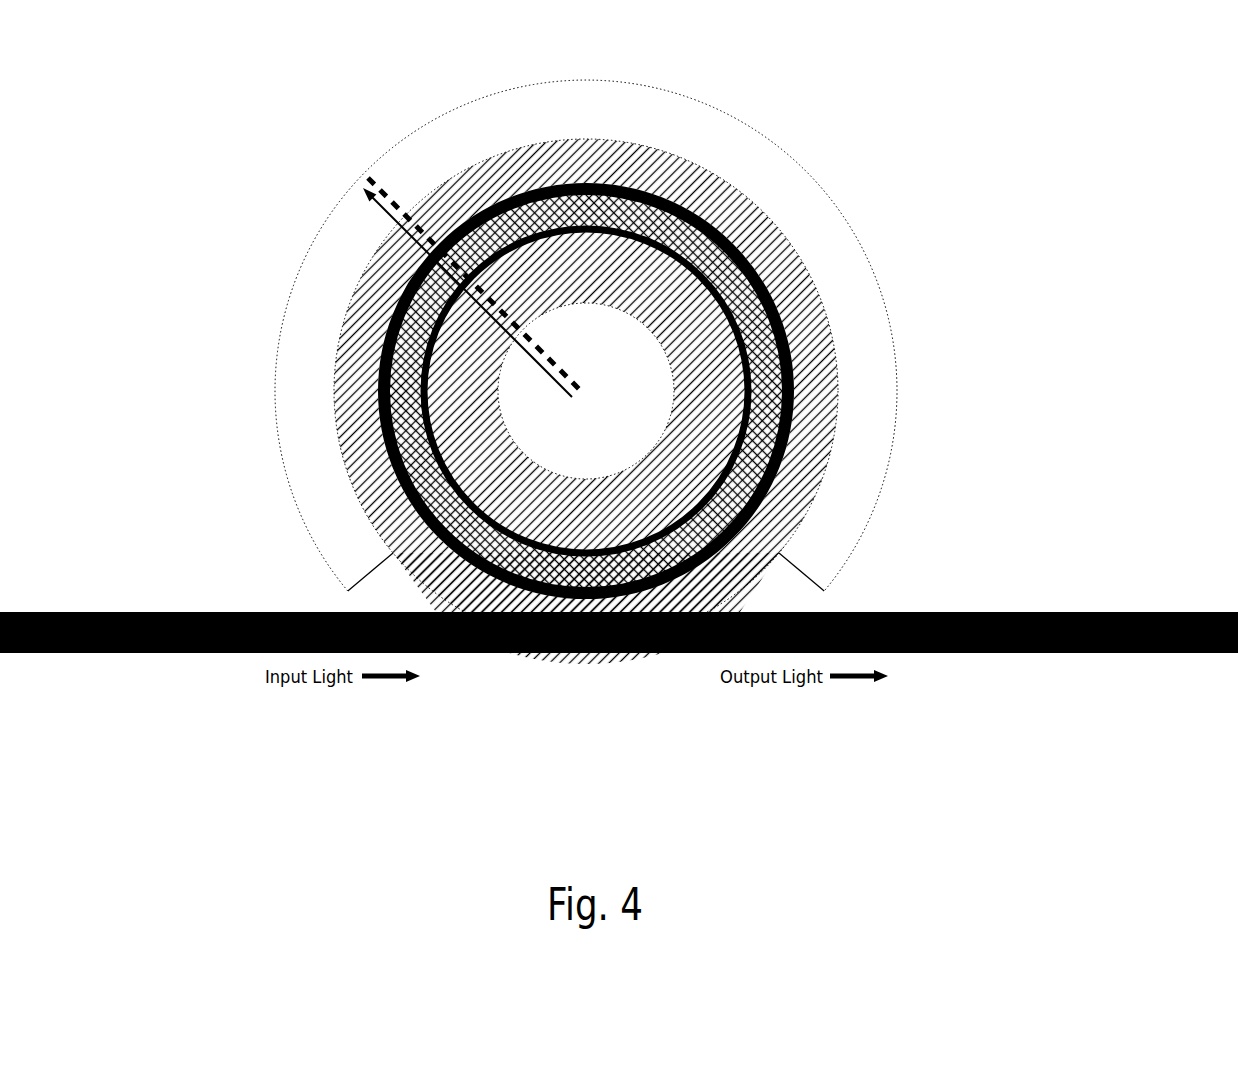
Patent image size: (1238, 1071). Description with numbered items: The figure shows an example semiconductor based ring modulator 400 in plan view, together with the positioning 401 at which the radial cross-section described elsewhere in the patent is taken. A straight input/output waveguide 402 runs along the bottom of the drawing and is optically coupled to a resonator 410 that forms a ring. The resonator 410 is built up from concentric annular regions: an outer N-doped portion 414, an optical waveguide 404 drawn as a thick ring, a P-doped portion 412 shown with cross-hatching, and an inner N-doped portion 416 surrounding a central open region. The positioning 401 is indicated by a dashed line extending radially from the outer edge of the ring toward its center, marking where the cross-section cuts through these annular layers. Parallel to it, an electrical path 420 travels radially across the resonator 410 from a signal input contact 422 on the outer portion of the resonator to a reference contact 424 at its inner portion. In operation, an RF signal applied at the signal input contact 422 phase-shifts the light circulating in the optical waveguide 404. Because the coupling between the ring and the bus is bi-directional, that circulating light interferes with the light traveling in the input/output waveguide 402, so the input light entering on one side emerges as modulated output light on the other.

The semiconductor based ring modulator 400 is at (619, 340).
The positioning 401 is at (369, 178).
The input/output waveguide 402 is at (241, 647).
The optical waveguide 404 is at (626, 180).
The resonator 410 is at (586, 372).
The P-doped portion 412 is at (569, 219).
The N-doped portion 414 is at (569, 170).
The N-doped portion 416 is at (569, 268).
The electrical path 420 is at (363, 189).
The signal input contact 422 is at (569, 122).
The reference contact 424 is at (569, 341).